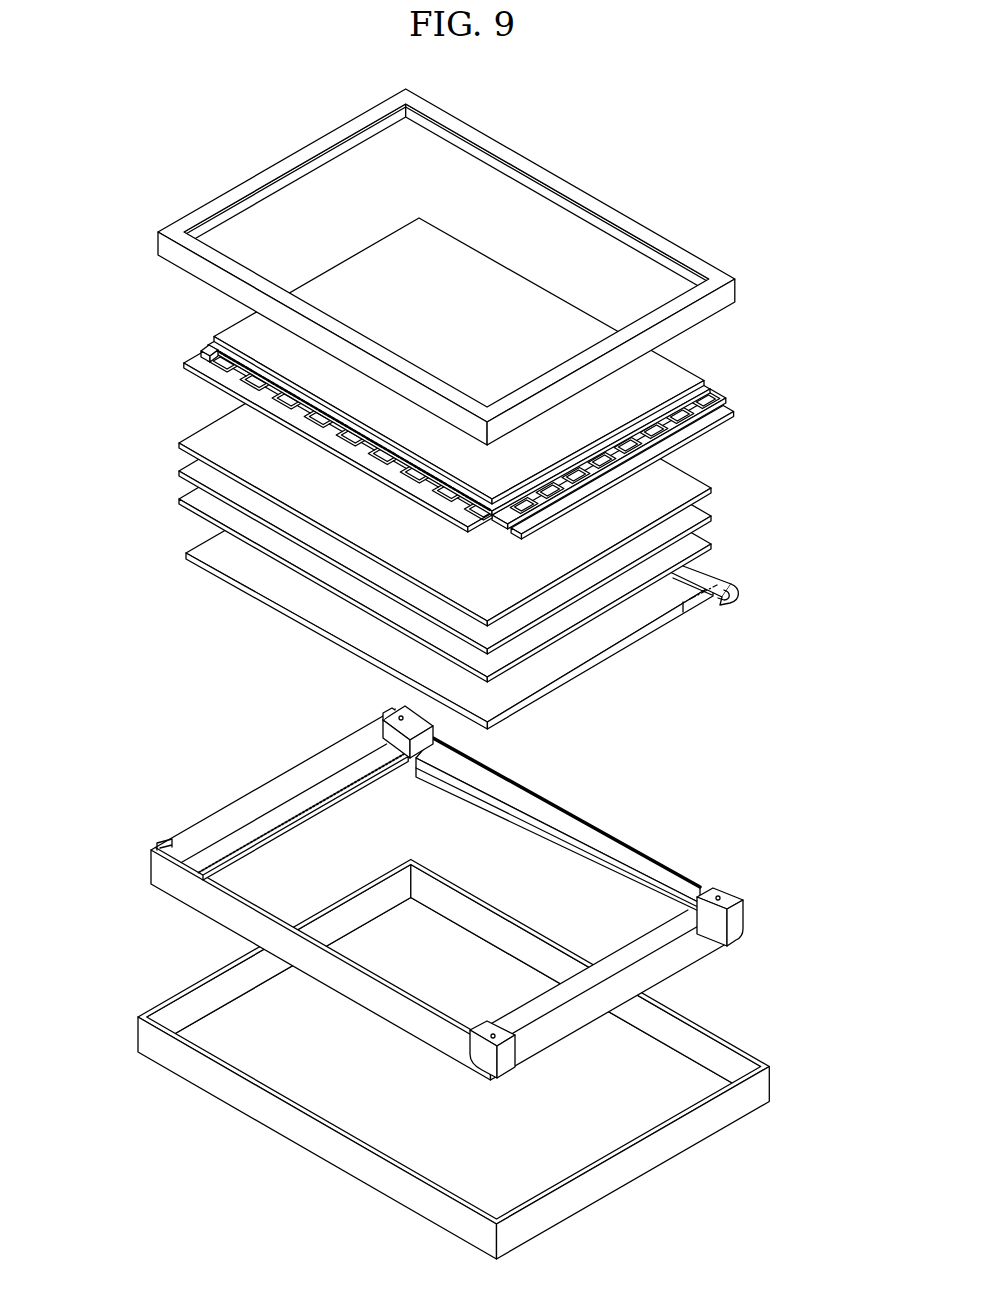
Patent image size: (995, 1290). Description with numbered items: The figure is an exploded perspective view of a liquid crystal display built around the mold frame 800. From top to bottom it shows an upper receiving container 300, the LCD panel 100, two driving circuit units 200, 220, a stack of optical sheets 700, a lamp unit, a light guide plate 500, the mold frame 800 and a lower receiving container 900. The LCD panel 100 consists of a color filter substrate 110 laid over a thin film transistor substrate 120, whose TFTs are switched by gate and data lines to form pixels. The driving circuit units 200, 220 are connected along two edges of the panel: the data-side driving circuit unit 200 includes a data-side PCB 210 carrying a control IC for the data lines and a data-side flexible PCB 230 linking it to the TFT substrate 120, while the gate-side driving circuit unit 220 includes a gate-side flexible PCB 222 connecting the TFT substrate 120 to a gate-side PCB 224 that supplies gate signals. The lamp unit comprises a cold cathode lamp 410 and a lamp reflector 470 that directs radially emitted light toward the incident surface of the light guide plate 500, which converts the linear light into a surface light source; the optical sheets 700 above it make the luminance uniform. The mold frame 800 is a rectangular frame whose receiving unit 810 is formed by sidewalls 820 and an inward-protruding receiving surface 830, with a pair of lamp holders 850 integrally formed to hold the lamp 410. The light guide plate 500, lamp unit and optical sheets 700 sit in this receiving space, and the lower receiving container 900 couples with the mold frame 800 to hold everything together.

The LCD panel 100 is at (541, 366).
The color filter substrate 110 is at (663, 374).
The thin film transistor substrate 120 is at (698, 394).
The driving circuit unit 200 is at (451, 375).
The data-side printed circuit board 210 is at (194, 363).
The data-side flexible printed circuit board 230 is at (209, 351).
The driving circuit unit 220 is at (683, 464).
The gate-side flexible printed circuit board 222 is at (701, 391).
The gate-side printed circuit board 224 is at (692, 418).
The upper receiving container 300 is at (726, 291).
The lamp 410 is at (597, 836).
The lamp reflector 470 is at (707, 553).
The light guide plate 500 is at (633, 640).
The optical sheets 700 is at (704, 487).
The mold frame 800 is at (501, 871).
The receiving unit 810 is at (294, 790).
The sidewalls 820 is at (246, 812).
The receiving surface 830 is at (311, 807).
The lamp holders 850 is at (397, 714).
The lower receiving container 900 is at (763, 1082).